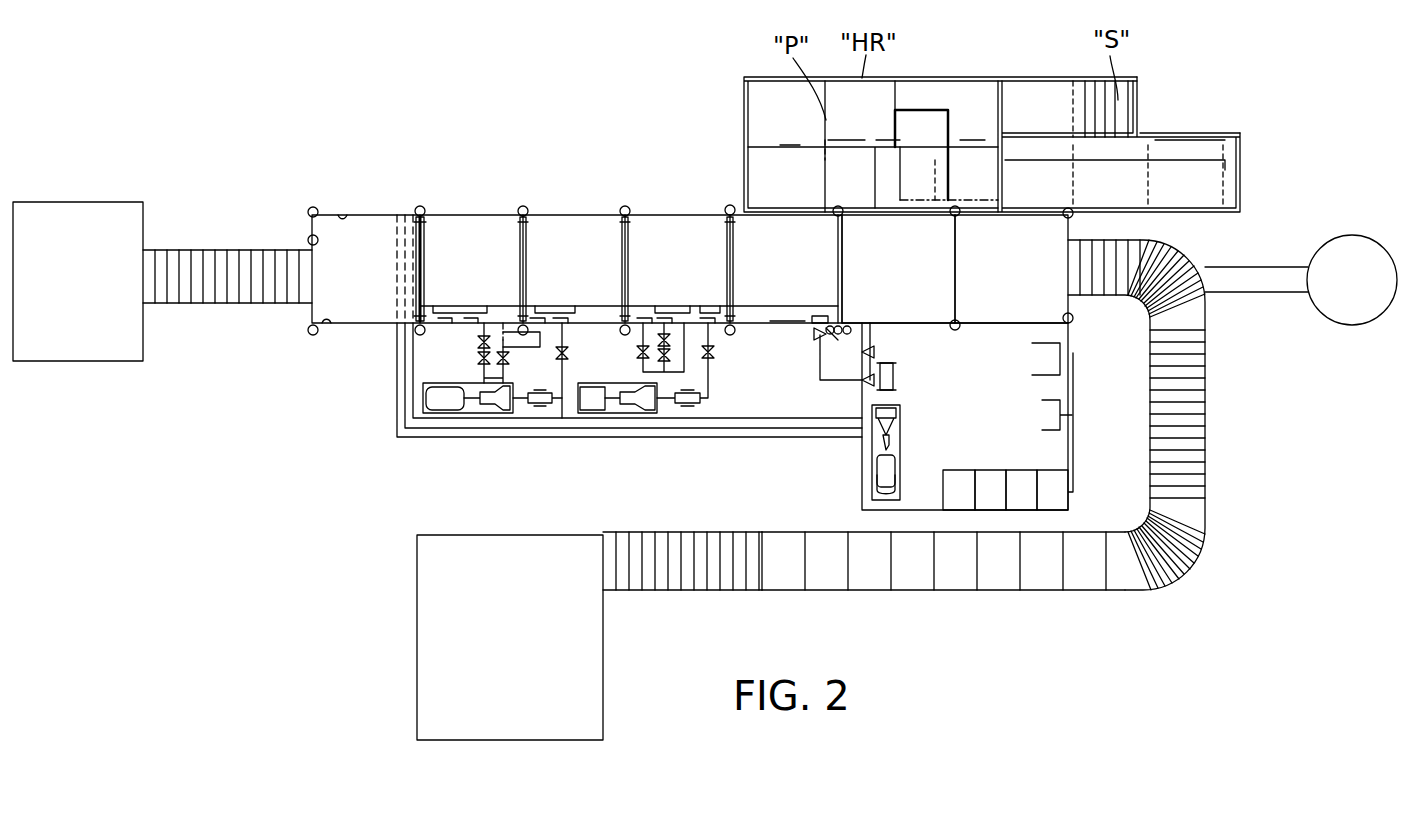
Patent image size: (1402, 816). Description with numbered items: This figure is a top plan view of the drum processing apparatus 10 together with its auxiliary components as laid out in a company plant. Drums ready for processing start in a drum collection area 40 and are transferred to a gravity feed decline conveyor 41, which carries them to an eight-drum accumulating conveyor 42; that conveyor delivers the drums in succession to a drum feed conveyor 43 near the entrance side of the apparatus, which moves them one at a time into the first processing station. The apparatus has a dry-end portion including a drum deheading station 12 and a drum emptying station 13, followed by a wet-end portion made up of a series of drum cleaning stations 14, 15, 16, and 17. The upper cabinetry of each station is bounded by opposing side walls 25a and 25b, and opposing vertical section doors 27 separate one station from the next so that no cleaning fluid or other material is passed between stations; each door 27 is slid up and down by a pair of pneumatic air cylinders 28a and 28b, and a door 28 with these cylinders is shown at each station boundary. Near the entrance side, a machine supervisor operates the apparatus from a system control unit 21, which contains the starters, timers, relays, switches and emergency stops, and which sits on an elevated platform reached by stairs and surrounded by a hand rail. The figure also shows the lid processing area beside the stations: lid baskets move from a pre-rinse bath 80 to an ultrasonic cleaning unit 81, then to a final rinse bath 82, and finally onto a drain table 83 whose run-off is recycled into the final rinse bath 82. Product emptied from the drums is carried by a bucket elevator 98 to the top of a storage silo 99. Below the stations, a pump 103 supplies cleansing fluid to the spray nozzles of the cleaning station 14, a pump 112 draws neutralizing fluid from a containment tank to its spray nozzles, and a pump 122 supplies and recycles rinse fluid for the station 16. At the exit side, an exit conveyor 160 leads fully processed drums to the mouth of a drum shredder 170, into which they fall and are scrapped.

The drum processing apparatus 10 is at (543, 122).
The drum deheading station 12 is at (1022, 283).
The drum emptying station 13 is at (912, 283).
The drum cleaning station 14 is at (807, 252).
The drum cleaning station 15 is at (692, 252).
The drum cleaning station 16 is at (588, 252).
The drum cleaning station 17 is at (484, 252).
The system control unit 21 is at (922, 127).
The side wall 25a is at (343, 216).
The side wall 25b is at (322, 328).
The vertical section door 27 is at (306, 238).
The partition door 28 is at (425, 212).
The pneumatic air cylinder 28a is at (312, 207).
The pneumatic air cylinder 28b is at (307, 333).
The drum collection area 40 is at (517, 647).
The gravity feed decline conveyor 41 is at (684, 592).
The accumulating conveyor 42 is at (905, 592).
The drum feed conveyor 43 is at (1207, 462).
The pre-rinse bath 80 is at (1066, 504).
The ultrasonic cleaning unit 81 is at (1035, 504).
The final rinse bath 82 is at (1004, 504).
The drain table 83 is at (972, 504).
The bucket elevator 98 is at (1260, 294).
The storage silo 99 is at (1368, 292).
The pump 103 is at (440, 406).
The pump 112 is at (616, 410).
The pump 122 is at (882, 470).
The exit conveyor 160 is at (200, 250).
The drum shredder 170 is at (103, 300).